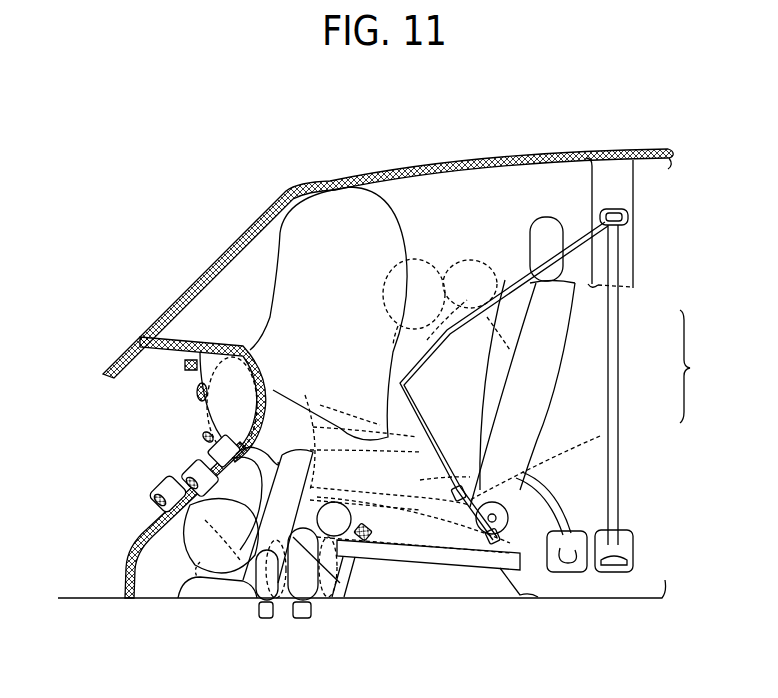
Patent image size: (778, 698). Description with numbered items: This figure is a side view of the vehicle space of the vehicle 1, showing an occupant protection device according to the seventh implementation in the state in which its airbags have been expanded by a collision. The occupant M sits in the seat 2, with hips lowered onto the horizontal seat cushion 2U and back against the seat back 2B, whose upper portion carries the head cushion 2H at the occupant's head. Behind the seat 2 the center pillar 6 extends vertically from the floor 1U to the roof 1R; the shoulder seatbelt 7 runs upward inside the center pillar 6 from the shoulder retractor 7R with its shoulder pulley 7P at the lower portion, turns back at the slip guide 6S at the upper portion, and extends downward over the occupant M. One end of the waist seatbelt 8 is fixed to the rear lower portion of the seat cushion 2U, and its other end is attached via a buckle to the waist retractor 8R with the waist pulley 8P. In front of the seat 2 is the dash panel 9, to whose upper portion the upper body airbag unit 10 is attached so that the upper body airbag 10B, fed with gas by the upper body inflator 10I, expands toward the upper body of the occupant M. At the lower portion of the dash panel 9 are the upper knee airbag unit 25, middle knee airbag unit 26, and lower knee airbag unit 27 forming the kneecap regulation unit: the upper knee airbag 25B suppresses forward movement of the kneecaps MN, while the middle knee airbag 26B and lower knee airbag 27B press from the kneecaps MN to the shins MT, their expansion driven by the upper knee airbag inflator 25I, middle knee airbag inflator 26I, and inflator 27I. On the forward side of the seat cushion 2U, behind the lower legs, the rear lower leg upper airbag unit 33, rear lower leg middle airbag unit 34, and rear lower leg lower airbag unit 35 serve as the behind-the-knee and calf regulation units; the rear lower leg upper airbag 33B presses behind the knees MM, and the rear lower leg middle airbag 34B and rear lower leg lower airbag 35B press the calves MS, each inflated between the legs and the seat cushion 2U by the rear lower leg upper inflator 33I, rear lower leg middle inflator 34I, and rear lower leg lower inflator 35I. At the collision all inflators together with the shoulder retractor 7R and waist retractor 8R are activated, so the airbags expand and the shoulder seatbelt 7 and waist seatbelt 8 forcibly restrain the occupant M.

The vehicle 1 is at (450, 134).
The roof 1R is at (557, 150).
The floor 1U is at (466, 600).
The seat 2 is at (691, 366).
The seat back 2B is at (543, 357).
The head cushion 2H is at (573, 277).
The seat cushion 2U is at (600, 436).
The center pillar 6 is at (612, 193).
The slip guide 6S is at (627, 218).
The shoulder seatbelt 7 is at (521, 273).
The shoulder retractor 7R is at (637, 537).
The shoulder pulley 7P is at (637, 560).
The waist seatbelt 8 is at (452, 492).
The waist retractor 8R is at (576, 530).
The waist pulley 8P is at (562, 572).
The dash panel 9 is at (218, 344).
The upper body airbag unit 10 is at (185, 365).
The upper body airbag 10B is at (276, 285).
The upper body inflator 10I is at (196, 392).
The upper knee airbag unit 25 is at (214, 440).
The upper knee airbag 25B is at (240, 448).
The upper knee airbag inflator 25I is at (203, 434).
The middle knee airbag unit 26 is at (207, 457).
The middle knee airbag 26B is at (187, 478).
The middle knee airbag inflator 26I is at (183, 455).
The lower knee airbag unit 27 is at (163, 500).
The lower knee airbag 27B is at (186, 574).
The upper knee airbag inflator 27I is at (155, 490).
The rear lower leg upper airbag unit 33 is at (378, 551).
The rear lower leg upper airbag 33B is at (312, 490).
The rear lower leg upper inflator 33I is at (367, 526).
The rear lower leg middle airbag unit 34 is at (322, 613).
The rear lower leg middle airbag 34B is at (323, 593).
The rear lower leg middle inflator 34I is at (305, 620).
The rear lower leg lower airbag unit 35 is at (260, 613).
The rear lower leg lower airbag 35B is at (253, 612).
The rear lower leg lower inflator 35I is at (270, 620).
The occupant M is at (424, 266).
The kneecaps MN is at (306, 420).
The behind the knees MM is at (323, 421).
The calves MS is at (349, 587).
The shins MT is at (187, 551).